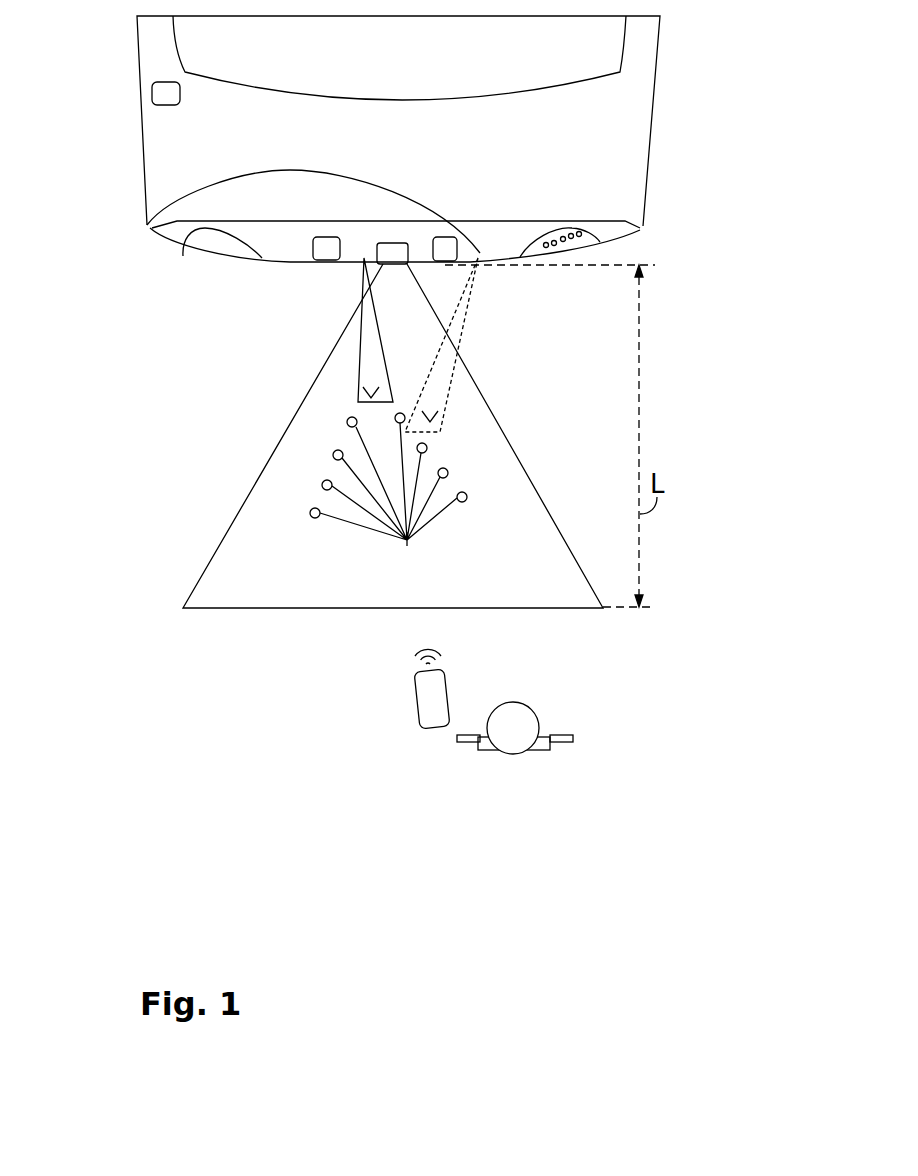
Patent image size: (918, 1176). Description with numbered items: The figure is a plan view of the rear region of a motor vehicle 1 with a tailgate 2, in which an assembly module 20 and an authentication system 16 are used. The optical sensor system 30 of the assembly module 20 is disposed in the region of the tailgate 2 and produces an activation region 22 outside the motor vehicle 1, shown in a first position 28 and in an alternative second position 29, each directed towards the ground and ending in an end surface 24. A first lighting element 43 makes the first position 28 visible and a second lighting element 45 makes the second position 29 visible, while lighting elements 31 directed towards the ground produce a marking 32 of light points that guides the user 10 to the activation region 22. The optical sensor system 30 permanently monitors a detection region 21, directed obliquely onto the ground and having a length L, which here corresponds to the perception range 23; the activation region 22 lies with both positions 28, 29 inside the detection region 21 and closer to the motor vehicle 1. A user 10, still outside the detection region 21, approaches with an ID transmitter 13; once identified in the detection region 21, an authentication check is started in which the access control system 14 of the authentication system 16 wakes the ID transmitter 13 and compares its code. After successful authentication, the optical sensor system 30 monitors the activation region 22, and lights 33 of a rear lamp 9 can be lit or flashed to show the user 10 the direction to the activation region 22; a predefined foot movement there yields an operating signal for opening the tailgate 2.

The motor vehicle 1 is at (690, 76).
The tailgate 2 is at (628, 152).
The rear lamp 9 is at (640, 232).
The user 10 is at (595, 743).
The ID transmitter 13 is at (435, 703).
The access control system 14 is at (167, 93).
The authentication system 16 is at (122, 168).
The assembly module 20 is at (245, 305).
The detection region 21 is at (280, 508).
The activation region 22 is at (400, 345).
The perception range 23 is at (270, 310).
The end surface 24 is at (363, 383).
The first position 28 is at (373, 334).
The second position 29 is at (443, 362).
The optical sensor system 30 is at (377, 262).
The lighting elements 31 is at (437, 237).
The marking 32 is at (388, 498).
The lights 33 is at (579, 231).
The first lighting element 43 is at (350, 259).
The second lighting element 45 is at (147, 225).